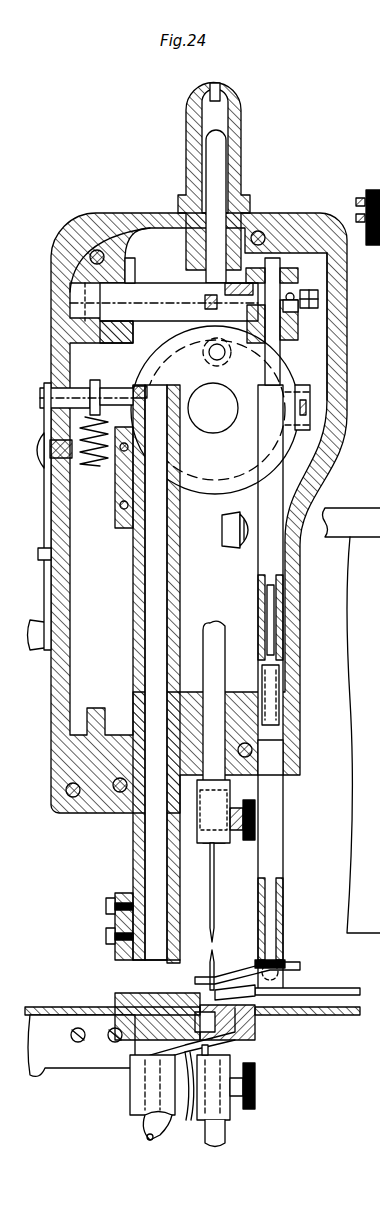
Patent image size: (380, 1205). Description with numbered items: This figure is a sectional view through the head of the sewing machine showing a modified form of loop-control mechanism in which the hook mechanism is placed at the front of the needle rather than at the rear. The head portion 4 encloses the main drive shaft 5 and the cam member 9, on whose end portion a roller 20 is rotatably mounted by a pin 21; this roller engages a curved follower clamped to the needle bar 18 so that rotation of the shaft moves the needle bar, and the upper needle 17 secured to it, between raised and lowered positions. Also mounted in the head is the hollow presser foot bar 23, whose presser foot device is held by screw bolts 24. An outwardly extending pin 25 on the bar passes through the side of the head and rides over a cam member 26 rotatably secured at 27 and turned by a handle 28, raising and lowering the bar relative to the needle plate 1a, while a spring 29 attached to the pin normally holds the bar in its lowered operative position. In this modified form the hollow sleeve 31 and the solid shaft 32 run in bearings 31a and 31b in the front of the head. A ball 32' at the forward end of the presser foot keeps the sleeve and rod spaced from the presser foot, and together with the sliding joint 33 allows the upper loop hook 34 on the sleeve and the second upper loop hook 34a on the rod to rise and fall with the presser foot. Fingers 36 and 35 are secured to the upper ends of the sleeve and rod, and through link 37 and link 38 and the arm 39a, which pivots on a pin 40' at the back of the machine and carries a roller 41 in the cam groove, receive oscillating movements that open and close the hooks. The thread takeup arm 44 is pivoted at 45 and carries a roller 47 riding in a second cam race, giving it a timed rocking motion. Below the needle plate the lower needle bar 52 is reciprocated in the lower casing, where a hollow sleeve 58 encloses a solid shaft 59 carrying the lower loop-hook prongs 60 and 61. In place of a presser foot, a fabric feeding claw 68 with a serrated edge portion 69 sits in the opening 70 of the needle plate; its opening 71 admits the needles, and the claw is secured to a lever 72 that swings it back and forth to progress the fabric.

The needle plate 1a is at (45, 1007).
The head portion 4 is at (338, 361).
The main drive shaft 5 is at (216, 428).
The cam member 9 is at (338, 383).
The upper needle 17 is at (212, 880).
The needle bar 18 is at (217, 148).
The roller 20 is at (220, 362).
The pin 21 is at (208, 357).
The presser foot bar 23 is at (178, 586).
The screw bolts 24 is at (106, 932).
The pin 25 is at (46, 388).
The cam member 26 is at (44, 538).
The pivot 27 is at (36, 450).
The handle 28 is at (36, 648).
The spring 29 is at (98, 465).
The hollow sleeve 31 is at (272, 500).
The bearing 31a is at (284, 746).
The bearing 31b is at (280, 270).
The solid shaft 32 is at (294, 614).
The ball 32' is at (290, 930).
The sliding joint 33 is at (272, 612).
The upper loop hook 34 is at (233, 960).
The second upper loop hook 34a is at (220, 972).
The forked lever 35 is at (292, 292).
The forked lever 36 is at (300, 312).
The link 37 is at (320, 297).
The link 38 is at (206, 305).
The arm 39a is at (156, 293).
The pin 40' is at (129, 192).
The roller 41 is at (190, 331).
The thread takeup arm 44 is at (222, 538).
The pivot 45 is at (252, 538).
The roller 47 is at (312, 420).
The needle bar 52 is at (232, 1115).
The hollow sleeve 58 is at (143, 1125).
The solid shaft 59 is at (147, 1139).
The prong 60 is at (184, 1091).
The prong 61 is at (222, 1044).
The fabric feeding claw 68 is at (250, 1022).
The serrated edge portion 69 is at (258, 995).
The opening 70 is at (300, 994).
The opening 71 is at (225, 1035).
The lever 72 is at (55, 1068).